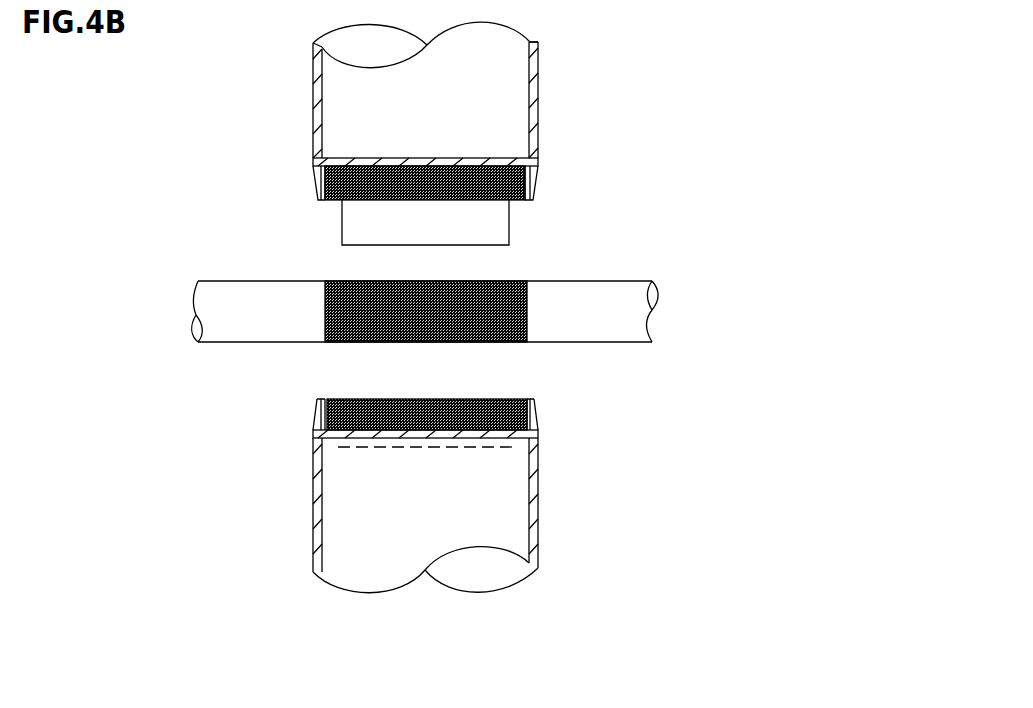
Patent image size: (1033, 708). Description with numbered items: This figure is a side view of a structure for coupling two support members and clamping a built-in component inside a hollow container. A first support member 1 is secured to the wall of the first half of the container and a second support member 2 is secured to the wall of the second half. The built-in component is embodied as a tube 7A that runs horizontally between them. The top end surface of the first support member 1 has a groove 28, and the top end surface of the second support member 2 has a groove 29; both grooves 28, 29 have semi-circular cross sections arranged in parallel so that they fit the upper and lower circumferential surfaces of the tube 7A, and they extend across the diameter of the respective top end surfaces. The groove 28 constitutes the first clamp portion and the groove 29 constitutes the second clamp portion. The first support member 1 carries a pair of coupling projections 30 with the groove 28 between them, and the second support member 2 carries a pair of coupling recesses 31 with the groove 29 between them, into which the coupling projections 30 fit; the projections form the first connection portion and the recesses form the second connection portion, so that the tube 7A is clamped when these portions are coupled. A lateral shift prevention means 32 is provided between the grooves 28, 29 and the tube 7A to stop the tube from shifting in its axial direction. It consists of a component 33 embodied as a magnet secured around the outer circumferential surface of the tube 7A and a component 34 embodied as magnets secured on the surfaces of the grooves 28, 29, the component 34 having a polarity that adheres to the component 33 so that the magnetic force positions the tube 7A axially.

The first support member 1 is at (477, 135).
The second support member 2 is at (446, 511).
The tube 7A is at (426, 302).
The groove 28 is at (536, 184).
The groove 29 is at (553, 0).
The coupling projection 30 is at (499, 225).
The coupling recess 31 is at (389, 451).
The lateral shift prevention means 32 is at (356, 364).
The component embodied as a magnet 33 is at (500, 334).
The component embodied as a magnet 34 is at (319, 186).